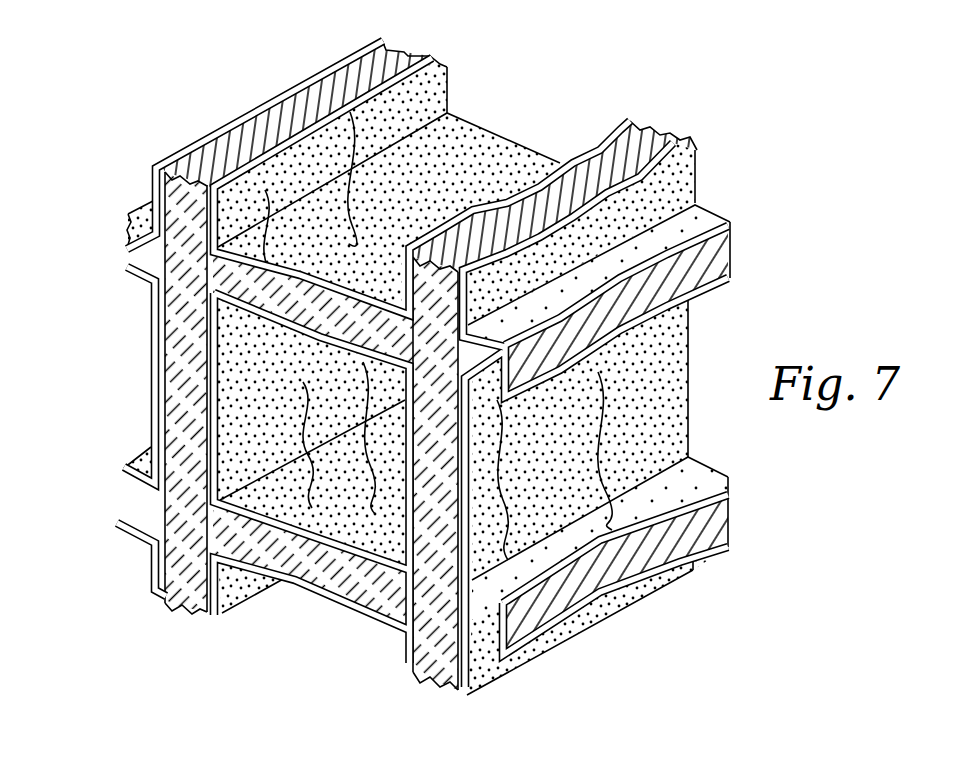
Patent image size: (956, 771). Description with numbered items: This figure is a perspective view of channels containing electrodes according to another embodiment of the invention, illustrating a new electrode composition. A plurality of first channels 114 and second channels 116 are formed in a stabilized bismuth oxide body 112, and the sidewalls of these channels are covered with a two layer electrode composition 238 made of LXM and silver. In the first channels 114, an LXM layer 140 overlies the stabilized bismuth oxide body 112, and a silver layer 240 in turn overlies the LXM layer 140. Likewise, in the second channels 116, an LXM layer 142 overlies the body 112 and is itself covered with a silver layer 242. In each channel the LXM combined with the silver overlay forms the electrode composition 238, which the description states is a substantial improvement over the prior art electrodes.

The stabilized bismuth oxide body 112 is at (120, 495).
The first channels 114 is at (150, 412).
The second channels 116 is at (100, 625).
The LXM layer 140 is at (517, 553).
The LXM layer 142 is at (348, 190).
The two layer electrode composition 238 is at (412, 373).
The silver layer 240 is at (617, 522).
The silver layer 242 is at (487, 197).